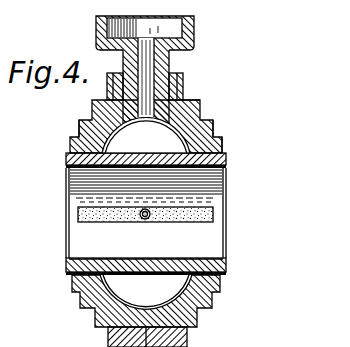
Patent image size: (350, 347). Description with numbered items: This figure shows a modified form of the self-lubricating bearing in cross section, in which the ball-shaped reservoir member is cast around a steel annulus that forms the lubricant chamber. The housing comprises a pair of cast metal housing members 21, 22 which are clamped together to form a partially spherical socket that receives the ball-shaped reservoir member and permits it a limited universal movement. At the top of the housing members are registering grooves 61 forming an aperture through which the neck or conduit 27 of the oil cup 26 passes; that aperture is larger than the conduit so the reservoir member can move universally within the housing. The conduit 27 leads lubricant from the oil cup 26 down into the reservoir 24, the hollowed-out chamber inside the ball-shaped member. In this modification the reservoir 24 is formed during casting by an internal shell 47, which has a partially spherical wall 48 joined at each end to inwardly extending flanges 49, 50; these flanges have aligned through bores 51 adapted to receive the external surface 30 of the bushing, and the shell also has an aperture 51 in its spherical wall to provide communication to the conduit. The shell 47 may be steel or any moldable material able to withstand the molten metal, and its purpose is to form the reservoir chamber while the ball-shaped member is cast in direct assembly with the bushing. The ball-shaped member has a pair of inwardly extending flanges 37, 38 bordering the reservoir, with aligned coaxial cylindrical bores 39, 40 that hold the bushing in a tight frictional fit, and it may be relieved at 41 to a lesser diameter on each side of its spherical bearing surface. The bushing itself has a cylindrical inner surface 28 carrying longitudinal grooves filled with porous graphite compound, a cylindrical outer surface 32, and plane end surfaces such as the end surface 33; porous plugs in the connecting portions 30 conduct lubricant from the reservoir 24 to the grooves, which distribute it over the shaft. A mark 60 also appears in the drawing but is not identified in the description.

The oil cup 26 is at (194, 22).
The neck or conduit 27 is at (180, 50).
The registering grooves 61 is at (107, 80).
The bonnet top 60 is at (182, 104).
The internal shell 47 is at (91, 113).
The relieved portion 41 is at (78, 136).
The connecting portions 30 is at (212, 133).
The inwardly extending flange 38 is at (221, 144).
The inwardly extending flange 37 is at (67, 155).
The cylindrical outer surface 32 is at (67, 168).
The plane end surface 33 is at (112, 166).
The reservoir 24 is at (225, 172).
The cylindrical inner surface 28 is at (200, 208).
The cylindrical bore 39 is at (67, 265).
The through bores 51 is at (100, 258).
The cylindrical bore 40 is at (204, 259).
The inwardly extending flange 49 is at (131, 266).
The inwardly extending flange 50 is at (180, 265).
The partially spherical wall 48 is at (130, 300).
The housing member 21 is at (108, 333).
The housing member 22 is at (188, 335).